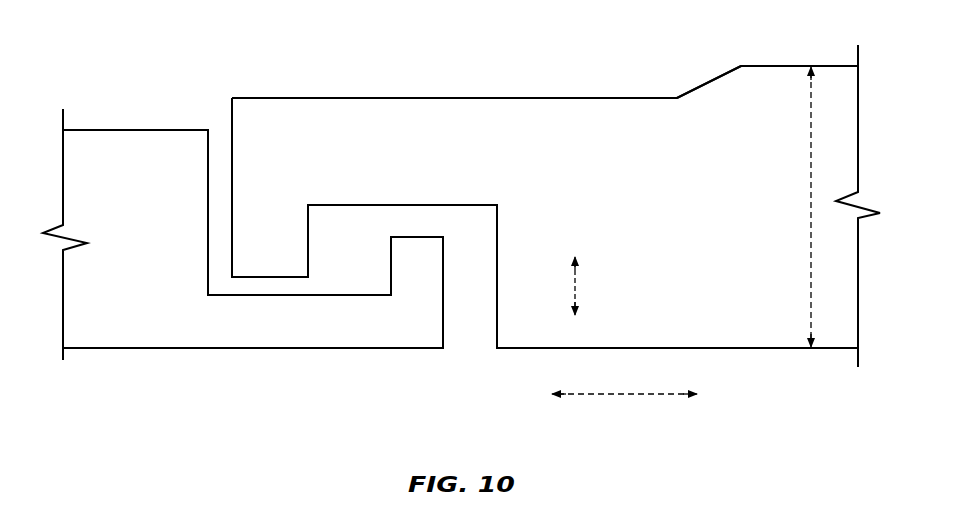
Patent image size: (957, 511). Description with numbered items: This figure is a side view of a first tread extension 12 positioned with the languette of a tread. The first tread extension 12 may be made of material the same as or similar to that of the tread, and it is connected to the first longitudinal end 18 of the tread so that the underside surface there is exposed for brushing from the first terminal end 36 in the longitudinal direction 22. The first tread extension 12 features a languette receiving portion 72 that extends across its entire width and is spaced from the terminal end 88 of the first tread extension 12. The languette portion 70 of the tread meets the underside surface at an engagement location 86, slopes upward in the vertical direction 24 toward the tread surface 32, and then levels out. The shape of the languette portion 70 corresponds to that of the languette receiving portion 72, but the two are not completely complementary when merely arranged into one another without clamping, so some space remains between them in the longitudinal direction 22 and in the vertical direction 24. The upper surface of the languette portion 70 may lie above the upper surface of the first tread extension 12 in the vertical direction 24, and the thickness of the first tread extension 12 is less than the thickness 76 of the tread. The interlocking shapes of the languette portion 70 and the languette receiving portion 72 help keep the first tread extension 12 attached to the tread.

The first tread extension 12 is at (120, 150).
The first longitudinal end 18 is at (762, 90).
The longitudinal direction 22 is at (630, 396).
The vertical direction 24 is at (577, 280).
The tread surface 32 is at (820, 349).
The first terminal end 36 is at (232, 186).
The languette portion 70 is at (268, 122).
The languette receiving portion 72 is at (350, 258).
The thickness 76 is at (811, 200).
The engagement location 86 is at (707, 80).
The terminal end 88 is at (443, 320).